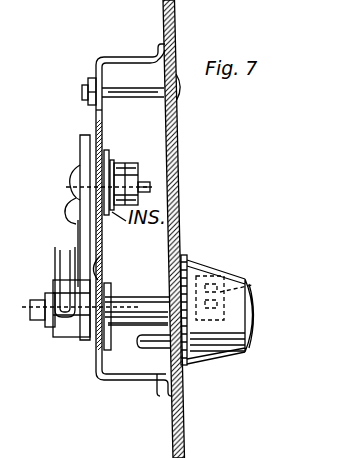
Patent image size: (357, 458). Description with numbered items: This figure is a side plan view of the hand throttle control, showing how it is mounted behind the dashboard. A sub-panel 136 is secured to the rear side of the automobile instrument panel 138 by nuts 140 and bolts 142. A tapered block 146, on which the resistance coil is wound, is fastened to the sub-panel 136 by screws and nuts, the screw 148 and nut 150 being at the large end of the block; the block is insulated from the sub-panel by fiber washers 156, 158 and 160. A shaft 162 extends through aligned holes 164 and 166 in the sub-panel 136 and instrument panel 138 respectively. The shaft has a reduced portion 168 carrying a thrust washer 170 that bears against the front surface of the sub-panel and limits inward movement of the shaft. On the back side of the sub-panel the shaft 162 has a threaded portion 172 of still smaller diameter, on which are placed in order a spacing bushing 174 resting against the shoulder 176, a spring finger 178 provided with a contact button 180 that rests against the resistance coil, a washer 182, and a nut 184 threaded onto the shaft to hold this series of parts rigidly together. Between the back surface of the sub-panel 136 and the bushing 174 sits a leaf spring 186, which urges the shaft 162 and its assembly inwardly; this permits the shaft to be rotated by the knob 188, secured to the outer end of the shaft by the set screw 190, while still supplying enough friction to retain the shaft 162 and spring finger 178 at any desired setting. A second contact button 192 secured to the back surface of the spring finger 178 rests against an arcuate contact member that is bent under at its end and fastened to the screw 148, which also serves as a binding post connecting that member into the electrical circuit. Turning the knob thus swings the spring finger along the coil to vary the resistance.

The sub-panel 136 is at (115, 57).
The instrument panel 138 is at (174, 146).
The nuts 140 is at (87, 80).
The bolts 142 is at (173, 62).
The tapered block 146 is at (80, 148).
The screw 148 is at (72, 177).
The nut 150 is at (118, 185).
The fiber washer 156 is at (90, 128).
The fiber washer 158 is at (110, 136).
The fiber washer 160 is at (152, 188).
The shaft 162 is at (112, 308).
The hole 164 is at (125, 286).
The hole 166 is at (178, 368).
The reduced portion 168 is at (102, 385).
The thrust washer 170 is at (137, 348).
The threaded portion 172 is at (35, 300).
The spacing bushing 174 is at (80, 330).
The shoulder 176 is at (88, 337).
The spring finger 178 is at (68, 228).
The contact button 180 is at (70, 197).
The washer 182 is at (68, 333).
The nut 184 is at (62, 334).
The leaf spring 186 is at (97, 266).
The knob 188 is at (226, 270).
The set screw 190 is at (256, 285).
The contact button 192 is at (60, 252).